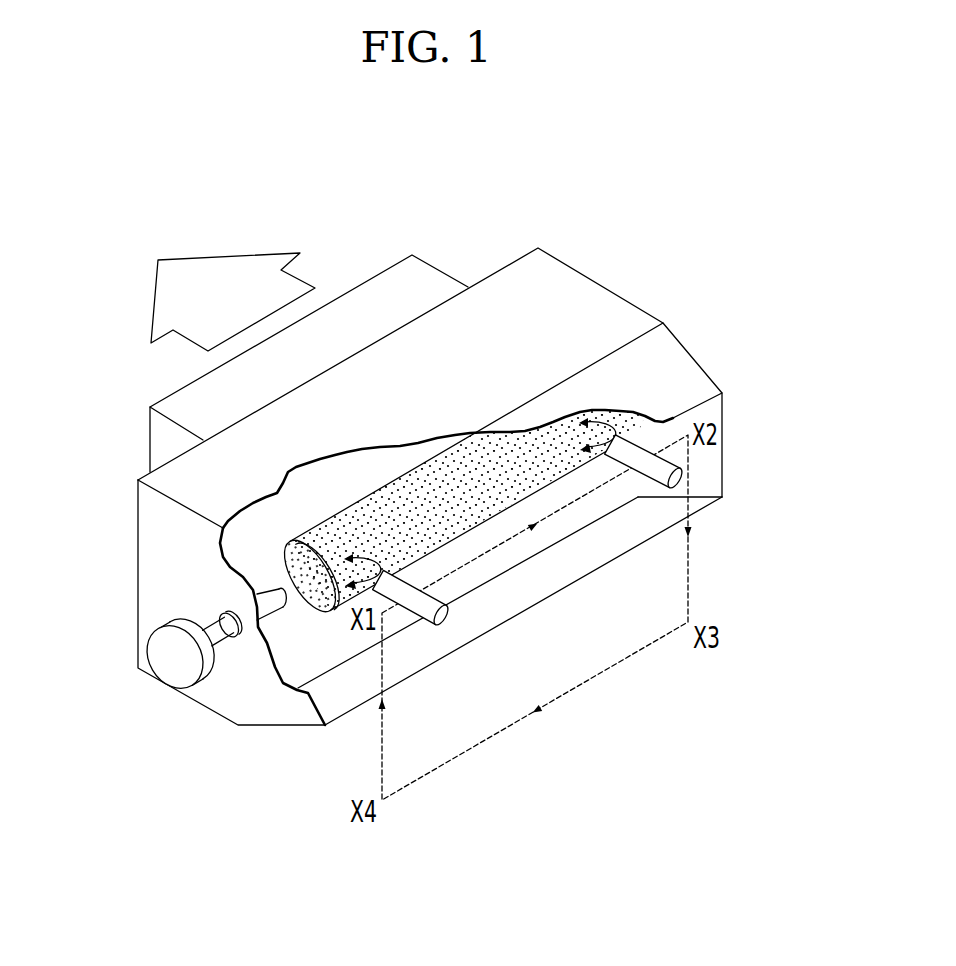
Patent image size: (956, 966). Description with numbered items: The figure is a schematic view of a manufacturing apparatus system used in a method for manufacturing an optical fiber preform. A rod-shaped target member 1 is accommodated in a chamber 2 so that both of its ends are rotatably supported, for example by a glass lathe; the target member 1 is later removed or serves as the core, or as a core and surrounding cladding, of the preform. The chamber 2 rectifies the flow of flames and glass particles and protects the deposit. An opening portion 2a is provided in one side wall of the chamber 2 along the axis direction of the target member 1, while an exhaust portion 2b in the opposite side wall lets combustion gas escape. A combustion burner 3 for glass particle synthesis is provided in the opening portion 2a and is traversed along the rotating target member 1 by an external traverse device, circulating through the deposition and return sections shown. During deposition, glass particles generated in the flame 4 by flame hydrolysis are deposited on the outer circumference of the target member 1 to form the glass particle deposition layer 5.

The target member 1 is at (236, 632).
The chamber 2 is at (585, 297).
The opening portion 2a is at (702, 503).
The exhaust portion 2b is at (172, 392).
The combustion burner 3 is at (678, 480).
The flame 4 is at (358, 562).
The glass particle deposition layer 5 is at (422, 490).